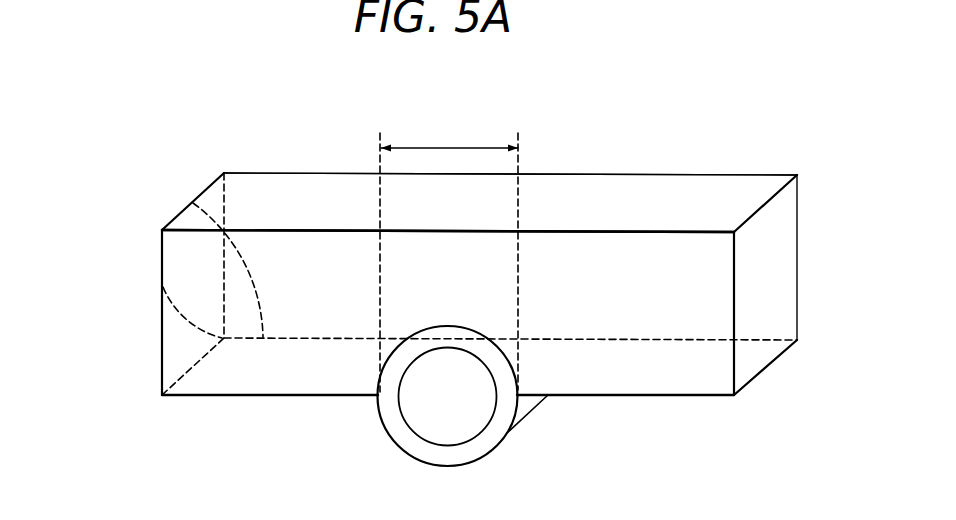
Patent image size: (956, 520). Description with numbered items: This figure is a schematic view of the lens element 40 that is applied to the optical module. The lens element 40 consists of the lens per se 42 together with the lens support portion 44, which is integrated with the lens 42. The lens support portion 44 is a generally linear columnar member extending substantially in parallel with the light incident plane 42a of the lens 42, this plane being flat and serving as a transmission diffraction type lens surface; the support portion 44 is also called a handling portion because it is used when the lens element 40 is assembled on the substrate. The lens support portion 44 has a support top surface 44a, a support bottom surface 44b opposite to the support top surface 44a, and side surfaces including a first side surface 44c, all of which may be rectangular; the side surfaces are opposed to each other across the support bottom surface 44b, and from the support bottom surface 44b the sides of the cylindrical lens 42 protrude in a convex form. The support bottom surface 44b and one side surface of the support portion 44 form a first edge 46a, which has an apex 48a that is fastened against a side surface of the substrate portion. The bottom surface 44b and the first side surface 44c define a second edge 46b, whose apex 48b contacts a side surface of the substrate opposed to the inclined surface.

The lens element 40 is at (800, 83).
The lens 42 is at (450, 146).
The light incident plane 42a is at (441, 400).
The lens support portion 44 is at (288, 186).
The support top surface 44a is at (335, 197).
The support bottom surface 44b is at (582, 370).
The first side surface 44c is at (289, 374).
The first edge 46a is at (194, 204).
The second edge 46b is at (683, 395).
The apex 48a is at (162, 288).
The apex 48b is at (734, 396).